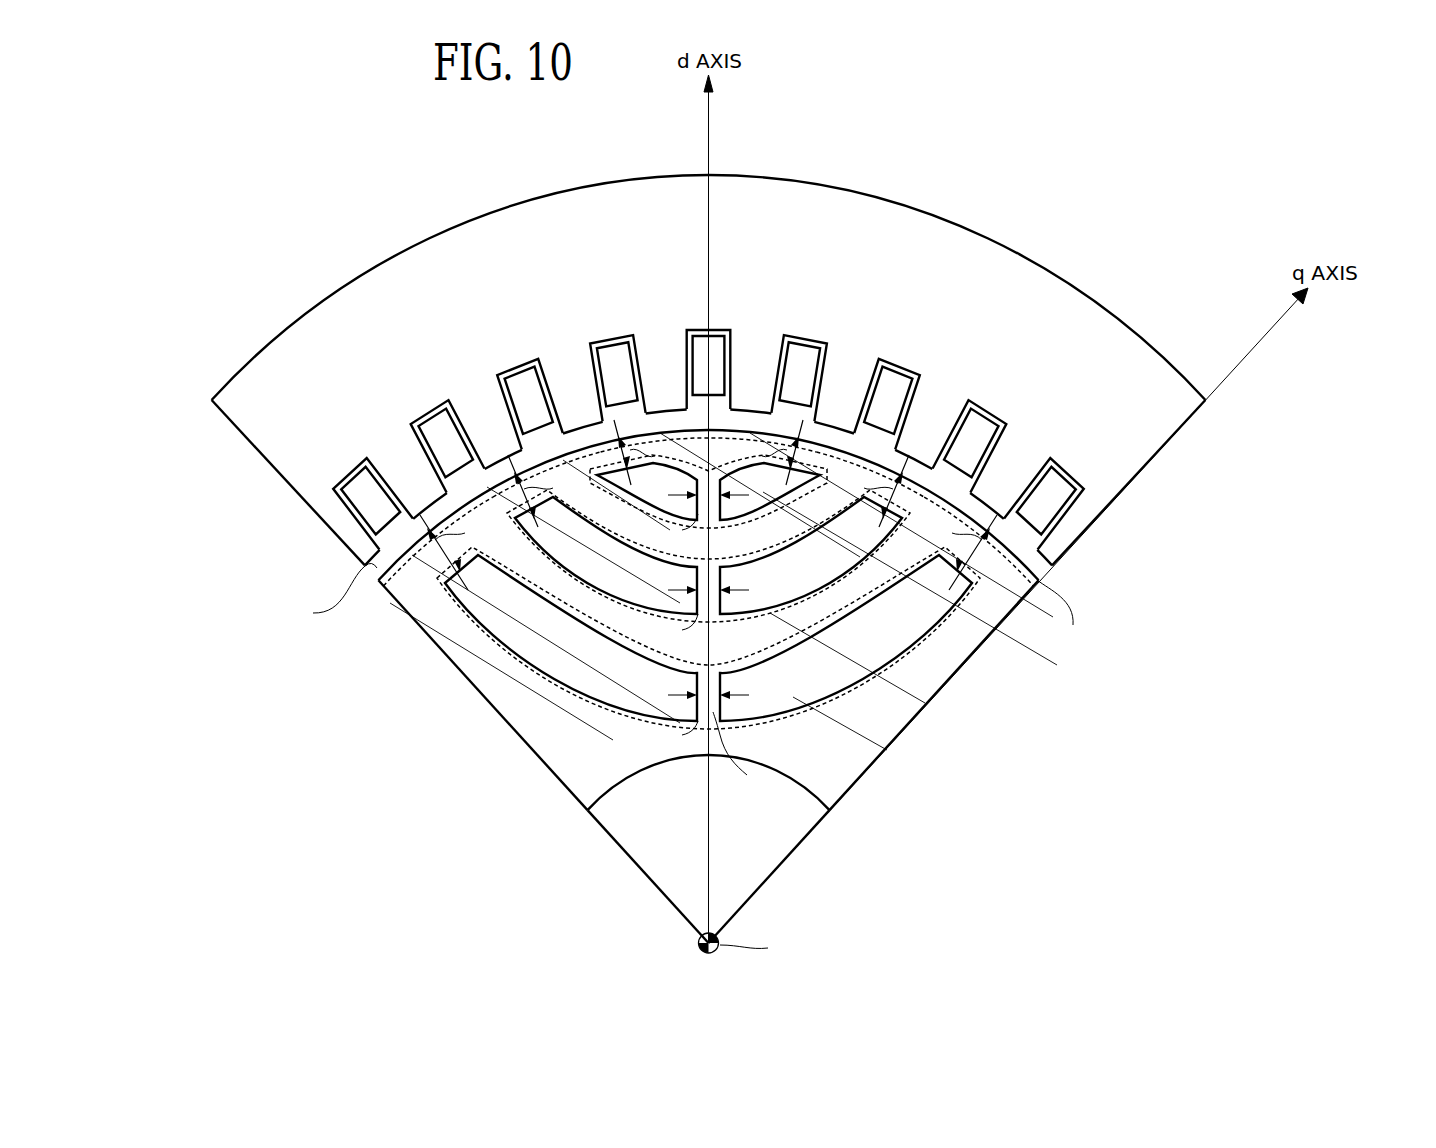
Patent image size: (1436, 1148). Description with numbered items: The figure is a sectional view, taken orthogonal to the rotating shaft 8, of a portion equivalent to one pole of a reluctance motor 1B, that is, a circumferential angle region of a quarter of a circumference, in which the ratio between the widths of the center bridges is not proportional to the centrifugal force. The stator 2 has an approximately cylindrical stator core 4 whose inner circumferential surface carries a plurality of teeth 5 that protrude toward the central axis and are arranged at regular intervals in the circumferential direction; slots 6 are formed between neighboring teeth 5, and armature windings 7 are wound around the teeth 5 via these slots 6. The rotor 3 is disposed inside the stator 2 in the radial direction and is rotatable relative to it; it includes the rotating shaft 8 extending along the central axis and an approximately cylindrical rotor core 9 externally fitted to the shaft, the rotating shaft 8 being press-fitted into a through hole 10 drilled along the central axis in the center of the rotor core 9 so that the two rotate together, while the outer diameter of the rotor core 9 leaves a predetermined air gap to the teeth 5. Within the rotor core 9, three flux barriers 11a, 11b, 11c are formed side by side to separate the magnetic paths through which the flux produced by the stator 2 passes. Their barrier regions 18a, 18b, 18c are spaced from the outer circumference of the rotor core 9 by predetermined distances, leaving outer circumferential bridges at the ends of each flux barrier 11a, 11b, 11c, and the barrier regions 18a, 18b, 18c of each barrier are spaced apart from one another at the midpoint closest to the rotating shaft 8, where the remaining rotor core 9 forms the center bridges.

The reluctance motor 1B is at (1177, 230).
The stator 2 is at (963, 225).
The rotor 3 is at (958, 667).
The stator core 4 is at (1130, 373).
The teeth 5 is at (567, 390).
The slots 6 is at (706, 343).
The armature windings 7 is at (615, 363).
The rotating shaft 8 is at (780, 852).
The rotor core 9 is at (888, 727).
The through hole 10 is at (600, 803).
The flux barrier 11a is at (822, 448).
The flux barrier 11b is at (900, 482).
The flux barrier 11c is at (970, 580).
The barrier regions 18a is at (787, 486).
The barrier regions 18b is at (783, 587).
The barrier regions 18c is at (793, 697).